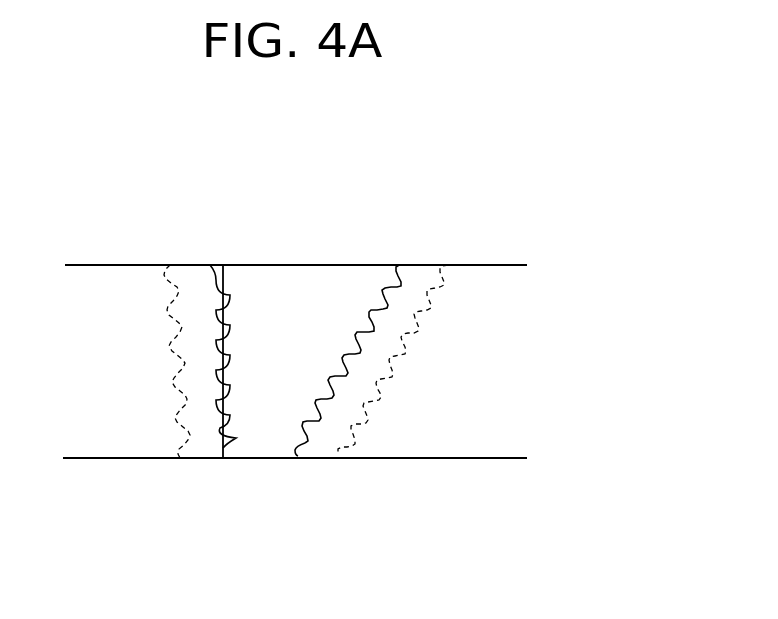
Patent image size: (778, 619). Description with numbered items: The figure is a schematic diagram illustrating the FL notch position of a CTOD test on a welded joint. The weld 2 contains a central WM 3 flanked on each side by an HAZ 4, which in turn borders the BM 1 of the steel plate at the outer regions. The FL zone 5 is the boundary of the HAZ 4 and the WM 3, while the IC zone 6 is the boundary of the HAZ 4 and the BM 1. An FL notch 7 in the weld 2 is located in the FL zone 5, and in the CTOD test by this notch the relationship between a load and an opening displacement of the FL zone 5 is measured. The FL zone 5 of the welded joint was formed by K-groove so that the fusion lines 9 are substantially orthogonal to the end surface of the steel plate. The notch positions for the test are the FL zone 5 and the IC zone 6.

The BM 1 is at (130, 298).
The weld 2 is at (395, 198).
The WM 3 is at (307, 298).
The HAZ 4 is at (190, 297).
The FL zone 5 is at (240, 472).
The IC zone 6 is at (178, 472).
The FL notch 7 is at (223, 440).
The fusion lines 9 is at (227, 440).